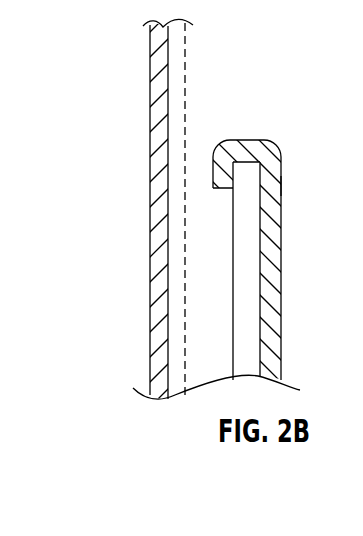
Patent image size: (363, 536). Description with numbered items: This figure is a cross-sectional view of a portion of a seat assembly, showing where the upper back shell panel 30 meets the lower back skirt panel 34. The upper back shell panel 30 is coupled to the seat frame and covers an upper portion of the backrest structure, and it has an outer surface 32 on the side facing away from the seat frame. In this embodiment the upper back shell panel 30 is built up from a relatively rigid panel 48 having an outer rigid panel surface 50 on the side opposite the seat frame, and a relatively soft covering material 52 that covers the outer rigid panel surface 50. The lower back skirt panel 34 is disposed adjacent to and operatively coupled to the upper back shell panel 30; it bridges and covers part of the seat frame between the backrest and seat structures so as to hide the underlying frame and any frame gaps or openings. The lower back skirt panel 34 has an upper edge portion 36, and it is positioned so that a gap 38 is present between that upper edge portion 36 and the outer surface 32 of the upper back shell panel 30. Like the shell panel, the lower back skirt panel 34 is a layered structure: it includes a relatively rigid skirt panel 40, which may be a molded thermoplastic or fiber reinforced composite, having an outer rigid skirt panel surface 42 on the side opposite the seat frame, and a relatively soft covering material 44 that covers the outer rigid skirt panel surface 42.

The upper back shell panel 30 is at (186, 53).
The outer surface 32 is at (186, 83).
The lower back skirt panel 34 is at (282, 247).
The upper edge portion 36 is at (262, 147).
The gap 38 is at (222, 241).
The relatively rigid skirt panel 40 is at (243, 208).
The outer rigid skirt panel surface 42 is at (271, 298).
The relatively soft covering material 44 is at (284, 186).
The relatively rigid panel 48 is at (158, 66).
The outer rigid panel surface 50 is at (168, 117).
The relatively soft covering material 52 is at (184, 345).